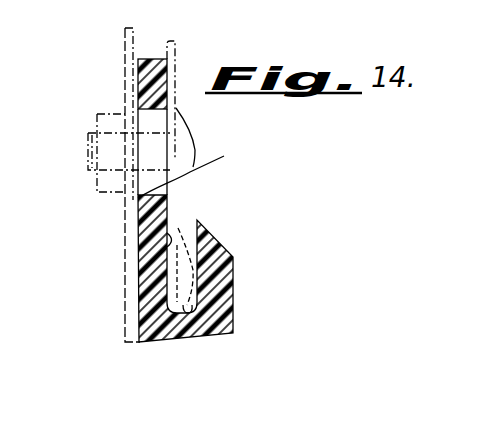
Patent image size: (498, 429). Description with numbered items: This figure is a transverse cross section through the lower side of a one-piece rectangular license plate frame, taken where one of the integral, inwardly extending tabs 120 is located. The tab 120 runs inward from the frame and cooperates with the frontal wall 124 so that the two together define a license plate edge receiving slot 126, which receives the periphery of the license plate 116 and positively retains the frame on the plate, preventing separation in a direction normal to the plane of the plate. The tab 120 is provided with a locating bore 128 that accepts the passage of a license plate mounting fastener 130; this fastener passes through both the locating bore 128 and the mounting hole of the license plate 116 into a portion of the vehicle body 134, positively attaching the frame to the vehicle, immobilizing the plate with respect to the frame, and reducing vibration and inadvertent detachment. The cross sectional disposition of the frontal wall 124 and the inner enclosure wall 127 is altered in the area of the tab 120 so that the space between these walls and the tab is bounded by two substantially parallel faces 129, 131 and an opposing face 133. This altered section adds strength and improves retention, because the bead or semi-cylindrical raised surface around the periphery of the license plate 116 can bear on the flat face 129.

The license plate 116 is at (189, 203).
The tab 120 is at (148, 70).
The frontal wall 124 is at (218, 308).
The license plate edge receiving slot 126 is at (182, 305).
The inner enclosure wall 127 is at (208, 243).
The locating bore 128 is at (199, 173).
The flat face 129 is at (206, 253).
The license plate mounting fastener 130 is at (188, 139).
The parallel face 131 is at (165, 258).
The opposing face 133 is at (182, 312).
The vehicle body portion 134 is at (130, 305).